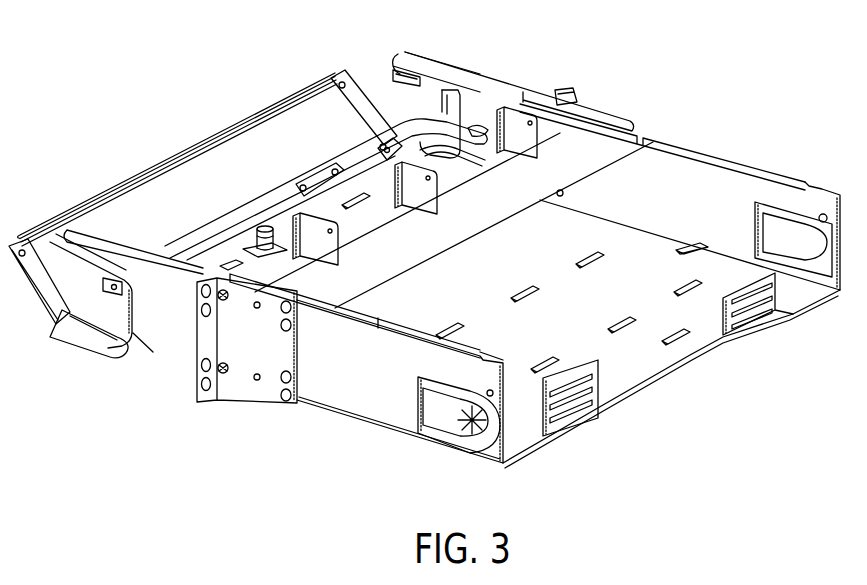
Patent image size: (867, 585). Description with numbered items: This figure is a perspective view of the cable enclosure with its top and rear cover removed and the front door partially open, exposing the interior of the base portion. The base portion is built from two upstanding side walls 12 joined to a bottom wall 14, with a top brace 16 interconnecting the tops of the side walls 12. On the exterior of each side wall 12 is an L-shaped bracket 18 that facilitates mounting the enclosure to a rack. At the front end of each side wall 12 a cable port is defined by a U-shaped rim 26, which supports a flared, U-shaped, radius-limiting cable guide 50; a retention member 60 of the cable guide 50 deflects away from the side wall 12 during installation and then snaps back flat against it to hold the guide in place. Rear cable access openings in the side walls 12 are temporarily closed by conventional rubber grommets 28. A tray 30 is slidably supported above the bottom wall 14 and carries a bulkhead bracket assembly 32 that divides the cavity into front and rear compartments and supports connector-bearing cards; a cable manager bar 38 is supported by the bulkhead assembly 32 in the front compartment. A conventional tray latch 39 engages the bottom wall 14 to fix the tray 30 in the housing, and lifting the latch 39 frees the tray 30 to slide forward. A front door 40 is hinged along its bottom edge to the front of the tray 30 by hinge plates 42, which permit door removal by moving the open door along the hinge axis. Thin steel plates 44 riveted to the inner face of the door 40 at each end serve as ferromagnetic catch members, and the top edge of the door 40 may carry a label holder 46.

The side wall 12 is at (368, 410).
The bottom wall 14 is at (697, 348).
The top brace 16 is at (627, 140).
The L-shaped bracket 18 is at (217, 383).
The U-shaped rim 26 is at (427, 87).
The rubber grommet 28 is at (445, 423).
The tray 30 is at (625, 365).
The bulkhead bracket assembly 32 is at (313, 238).
The cable manager bar 38 is at (358, 147).
The tray latch 39 is at (245, 243).
The front door 40 is at (145, 196).
The hinge plate 42 is at (110, 284).
The steel plate 44 is at (42, 283).
The label holder 46 is at (195, 148).
The cable guide 50 is at (85, 337).
The retention member 60 is at (477, 123).